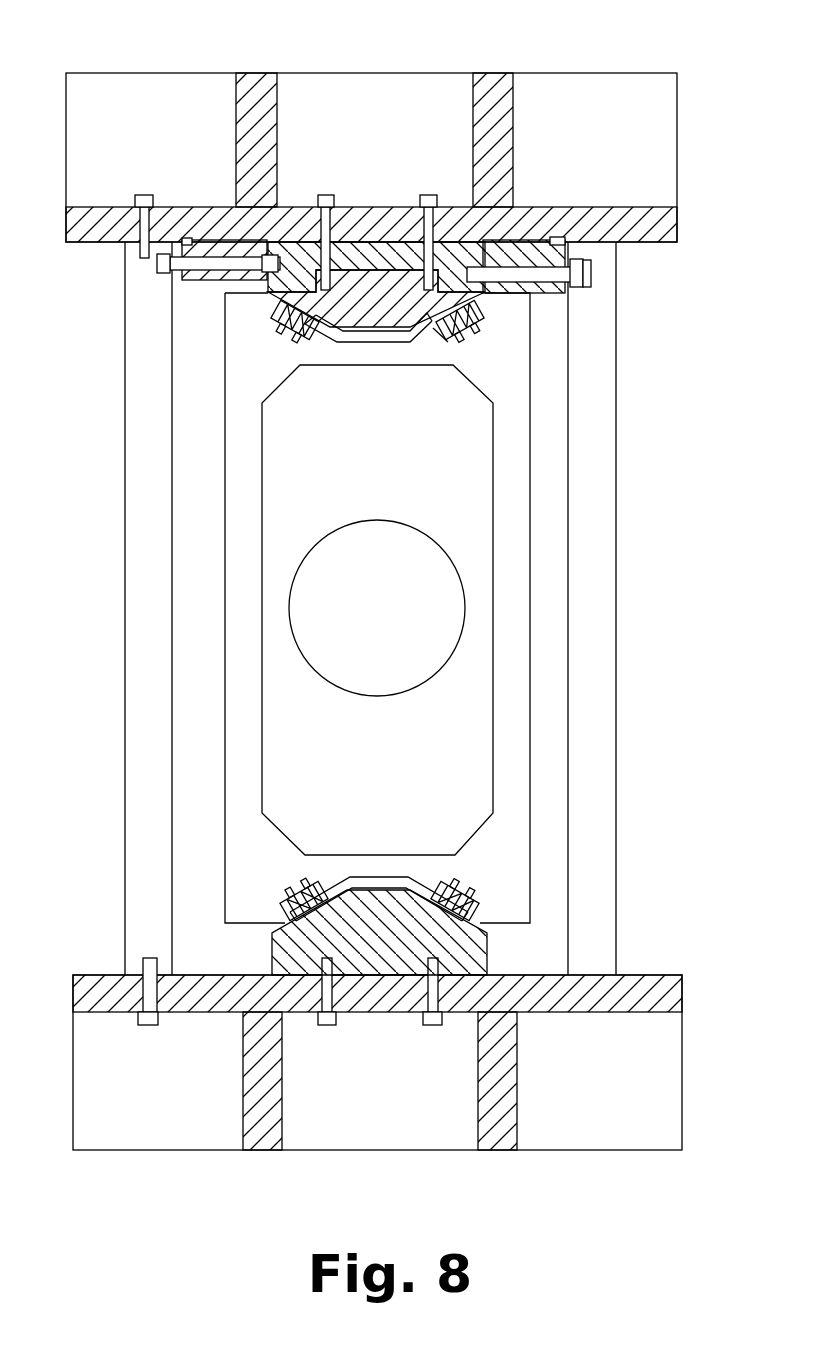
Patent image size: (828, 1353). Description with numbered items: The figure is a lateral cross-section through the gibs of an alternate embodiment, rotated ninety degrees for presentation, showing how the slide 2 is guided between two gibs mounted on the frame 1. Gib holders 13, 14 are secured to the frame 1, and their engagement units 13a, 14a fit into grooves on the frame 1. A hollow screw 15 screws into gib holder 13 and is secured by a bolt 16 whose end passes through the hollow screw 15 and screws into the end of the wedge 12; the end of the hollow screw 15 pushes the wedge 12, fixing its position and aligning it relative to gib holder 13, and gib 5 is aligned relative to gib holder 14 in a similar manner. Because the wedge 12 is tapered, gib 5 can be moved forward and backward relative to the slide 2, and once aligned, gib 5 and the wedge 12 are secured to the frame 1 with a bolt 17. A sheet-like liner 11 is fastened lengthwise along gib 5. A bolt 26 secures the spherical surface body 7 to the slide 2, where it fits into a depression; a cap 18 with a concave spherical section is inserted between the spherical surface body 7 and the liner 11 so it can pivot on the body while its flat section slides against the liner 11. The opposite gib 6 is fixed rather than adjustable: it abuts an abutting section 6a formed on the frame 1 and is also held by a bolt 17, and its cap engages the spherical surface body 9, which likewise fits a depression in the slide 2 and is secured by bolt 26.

The frame 1 is at (254, 84).
The slide 2 is at (517, 507).
The gib 5 is at (373, 303).
The gib 6 is at (383, 942).
The abutting section 6a is at (265, 988).
The spherical surface body 7 is at (458, 322).
The spherical surface body 9 is at (467, 890).
The liner 11 is at (428, 322).
The wedge 12 is at (356, 242).
The gib holder 13 is at (215, 242).
The engagement unit 13a is at (187, 241).
The gib holder 14 is at (530, 252).
The engagement unit 14a is at (558, 238).
The hollow screw 15 is at (167, 273).
The bolt 16 is at (160, 263).
The bolt 17 is at (318, 195).
The cap 18 is at (437, 337).
The bolt 26 is at (480, 326).